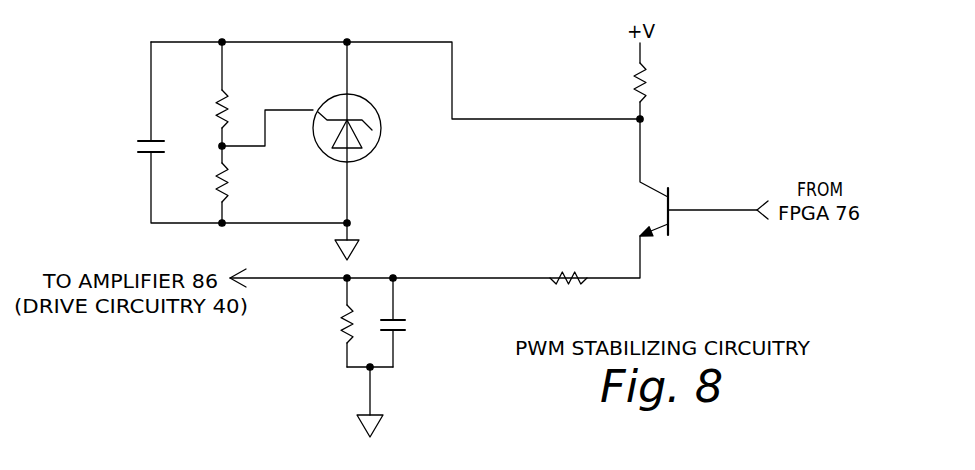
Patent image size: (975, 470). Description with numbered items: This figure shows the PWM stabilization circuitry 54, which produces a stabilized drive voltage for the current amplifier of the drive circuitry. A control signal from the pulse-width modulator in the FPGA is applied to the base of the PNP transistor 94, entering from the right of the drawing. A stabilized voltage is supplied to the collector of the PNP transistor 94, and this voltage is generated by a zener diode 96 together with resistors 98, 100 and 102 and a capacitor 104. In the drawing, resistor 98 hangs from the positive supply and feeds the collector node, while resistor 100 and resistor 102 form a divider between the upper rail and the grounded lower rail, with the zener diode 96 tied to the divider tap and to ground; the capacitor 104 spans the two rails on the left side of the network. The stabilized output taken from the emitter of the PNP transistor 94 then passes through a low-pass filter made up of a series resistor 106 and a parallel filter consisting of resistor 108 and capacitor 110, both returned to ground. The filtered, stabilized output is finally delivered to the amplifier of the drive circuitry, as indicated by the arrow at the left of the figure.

The PWM stabilization circuitry 54 is at (120, 66).
The capacitor 104 is at (140, 147).
The resistor 100 is at (232, 97).
The resistor 102 is at (232, 177).
The zener diode 96 is at (375, 148).
The resistor 98 is at (645, 88).
The PNP transistor 94 is at (676, 252).
The resistor 106 is at (560, 270).
The resistor 108 is at (340, 326).
The capacitor 110 is at (408, 326).